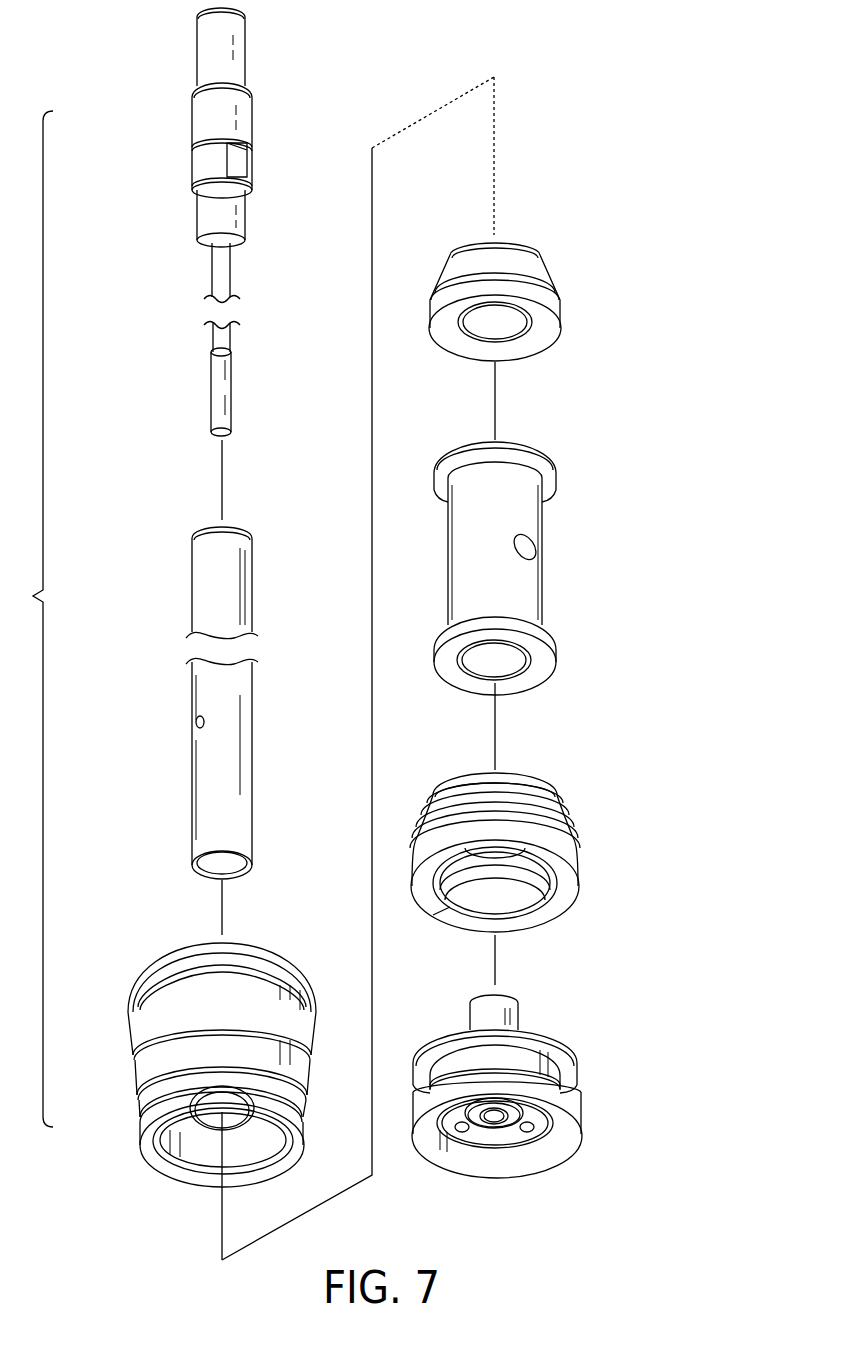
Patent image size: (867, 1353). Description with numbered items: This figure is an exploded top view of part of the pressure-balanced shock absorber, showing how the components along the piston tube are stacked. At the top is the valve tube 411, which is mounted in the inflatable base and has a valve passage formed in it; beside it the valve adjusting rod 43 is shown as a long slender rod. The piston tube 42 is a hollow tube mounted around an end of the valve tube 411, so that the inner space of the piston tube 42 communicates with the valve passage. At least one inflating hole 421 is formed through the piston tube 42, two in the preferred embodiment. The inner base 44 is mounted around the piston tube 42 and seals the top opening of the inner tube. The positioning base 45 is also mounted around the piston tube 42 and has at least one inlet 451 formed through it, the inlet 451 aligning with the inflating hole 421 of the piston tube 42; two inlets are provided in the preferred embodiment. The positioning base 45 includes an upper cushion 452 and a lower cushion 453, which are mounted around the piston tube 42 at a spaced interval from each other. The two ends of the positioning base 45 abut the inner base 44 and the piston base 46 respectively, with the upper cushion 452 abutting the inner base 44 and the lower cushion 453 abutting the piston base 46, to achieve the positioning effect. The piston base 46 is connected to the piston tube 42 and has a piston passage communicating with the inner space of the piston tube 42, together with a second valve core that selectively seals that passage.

The valve tube 411 is at (192, 117).
The valve adjusting rod 43 is at (206, 273).
The piston tube 42 is at (196, 596).
The inflating hole 421 is at (196, 720).
The inner base 44 is at (142, 1020).
The positioning base 45 is at (665, 260).
The inlet 451 is at (536, 548).
The upper cushion 452 is at (545, 268).
The lower cushion 453 is at (556, 828).
The piston base 46 is at (566, 1048).